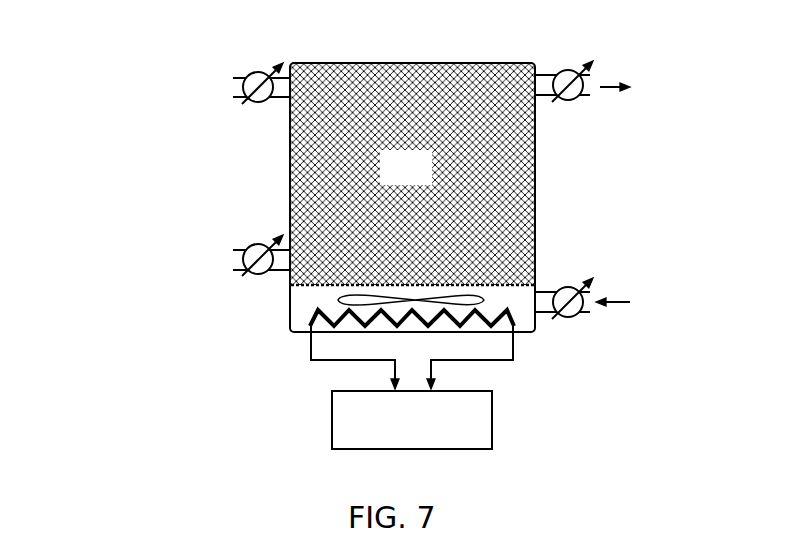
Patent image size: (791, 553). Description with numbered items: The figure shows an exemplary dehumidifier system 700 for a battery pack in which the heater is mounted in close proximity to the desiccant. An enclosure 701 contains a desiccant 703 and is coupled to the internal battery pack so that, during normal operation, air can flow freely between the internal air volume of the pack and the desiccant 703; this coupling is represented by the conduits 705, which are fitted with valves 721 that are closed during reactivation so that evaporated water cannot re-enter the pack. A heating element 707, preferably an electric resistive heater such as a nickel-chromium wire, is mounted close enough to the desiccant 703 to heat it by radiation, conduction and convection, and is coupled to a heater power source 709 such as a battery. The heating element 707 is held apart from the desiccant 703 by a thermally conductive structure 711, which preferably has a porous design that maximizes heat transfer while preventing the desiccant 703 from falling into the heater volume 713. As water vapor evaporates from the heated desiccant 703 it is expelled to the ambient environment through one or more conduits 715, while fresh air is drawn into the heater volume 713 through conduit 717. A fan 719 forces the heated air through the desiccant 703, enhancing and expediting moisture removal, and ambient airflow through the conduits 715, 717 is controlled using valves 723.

The dehumidifier system 700 is at (121, 170).
The enclosure 701 is at (380, 63).
The desiccant 703 is at (423, 180).
The conduits 705 is at (283, 99).
The heating element 707 is at (509, 305).
The heater power source 709 is at (510, 426).
The thermally conductive structure 711 is at (500, 283).
The heater volume 713 is at (301, 303).
The conduits 715 is at (540, 75).
The conduits 717 is at (540, 292).
The fan 719 is at (458, 295).
The valves 721 is at (258, 71).
The valves 723 is at (566, 101).